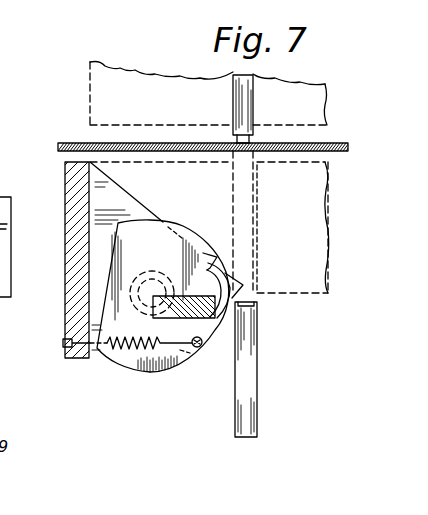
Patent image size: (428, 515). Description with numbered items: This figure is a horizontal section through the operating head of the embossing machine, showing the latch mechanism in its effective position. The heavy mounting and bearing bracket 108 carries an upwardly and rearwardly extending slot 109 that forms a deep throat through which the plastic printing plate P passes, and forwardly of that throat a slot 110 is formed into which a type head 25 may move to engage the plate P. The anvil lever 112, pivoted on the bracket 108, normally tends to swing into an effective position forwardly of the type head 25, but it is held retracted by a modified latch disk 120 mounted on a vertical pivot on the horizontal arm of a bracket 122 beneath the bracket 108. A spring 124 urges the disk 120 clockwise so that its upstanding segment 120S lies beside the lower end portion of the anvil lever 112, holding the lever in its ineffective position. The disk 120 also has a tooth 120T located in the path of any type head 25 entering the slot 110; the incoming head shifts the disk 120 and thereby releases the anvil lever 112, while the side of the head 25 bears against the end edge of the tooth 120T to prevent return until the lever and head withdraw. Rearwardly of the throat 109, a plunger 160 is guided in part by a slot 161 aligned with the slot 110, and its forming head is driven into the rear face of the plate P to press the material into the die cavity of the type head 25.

The printing plate P is at (83, 143).
The mounting and bearing bracket 108 is at (90, 88).
The slot (throat) 109 is at (115, 125).
The slot 110 is at (258, 188).
The anvil lever 112 is at (182, 293).
The latch disk 120 is at (153, 373).
The upstanding segment 120S is at (205, 272).
The tooth 120T is at (243, 285).
The bracket 122 is at (83, 202).
The spring 124 is at (122, 350).
The type head 25 is at (247, 220).
The plunger 160 is at (251, 115).
The slot 161 is at (232, 94).